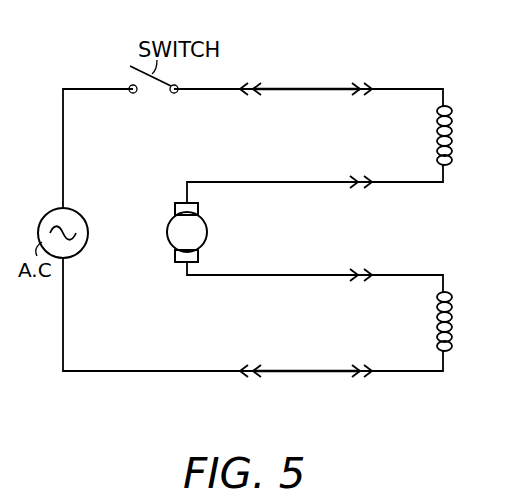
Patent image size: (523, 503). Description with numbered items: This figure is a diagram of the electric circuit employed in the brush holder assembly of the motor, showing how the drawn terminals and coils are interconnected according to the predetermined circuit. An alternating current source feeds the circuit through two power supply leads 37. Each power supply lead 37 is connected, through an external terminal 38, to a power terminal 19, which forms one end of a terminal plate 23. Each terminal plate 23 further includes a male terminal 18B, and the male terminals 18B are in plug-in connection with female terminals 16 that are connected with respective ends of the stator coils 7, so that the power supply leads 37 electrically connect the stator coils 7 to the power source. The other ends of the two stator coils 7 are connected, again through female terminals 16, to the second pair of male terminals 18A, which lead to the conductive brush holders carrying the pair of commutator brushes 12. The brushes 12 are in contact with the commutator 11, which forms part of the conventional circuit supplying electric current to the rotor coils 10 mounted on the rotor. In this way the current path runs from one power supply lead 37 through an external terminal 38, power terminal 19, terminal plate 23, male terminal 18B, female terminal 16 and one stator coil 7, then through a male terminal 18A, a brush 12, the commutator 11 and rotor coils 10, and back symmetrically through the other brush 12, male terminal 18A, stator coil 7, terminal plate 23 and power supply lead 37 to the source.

The stator coils 7 is at (450, 115).
The rotor coils 10 is at (207, 231).
The commutator 11 is at (226, 232).
The commutator brushes 12 is at (176, 208).
The female terminals 16 is at (373, 85).
The male terminals 18A is at (357, 186).
The male terminals 18B is at (358, 85).
The power terminals 19 is at (257, 85).
The terminal plate 23 is at (313, 85).
The power supply lead 37 is at (203, 92).
The external terminal 38 is at (245, 85).